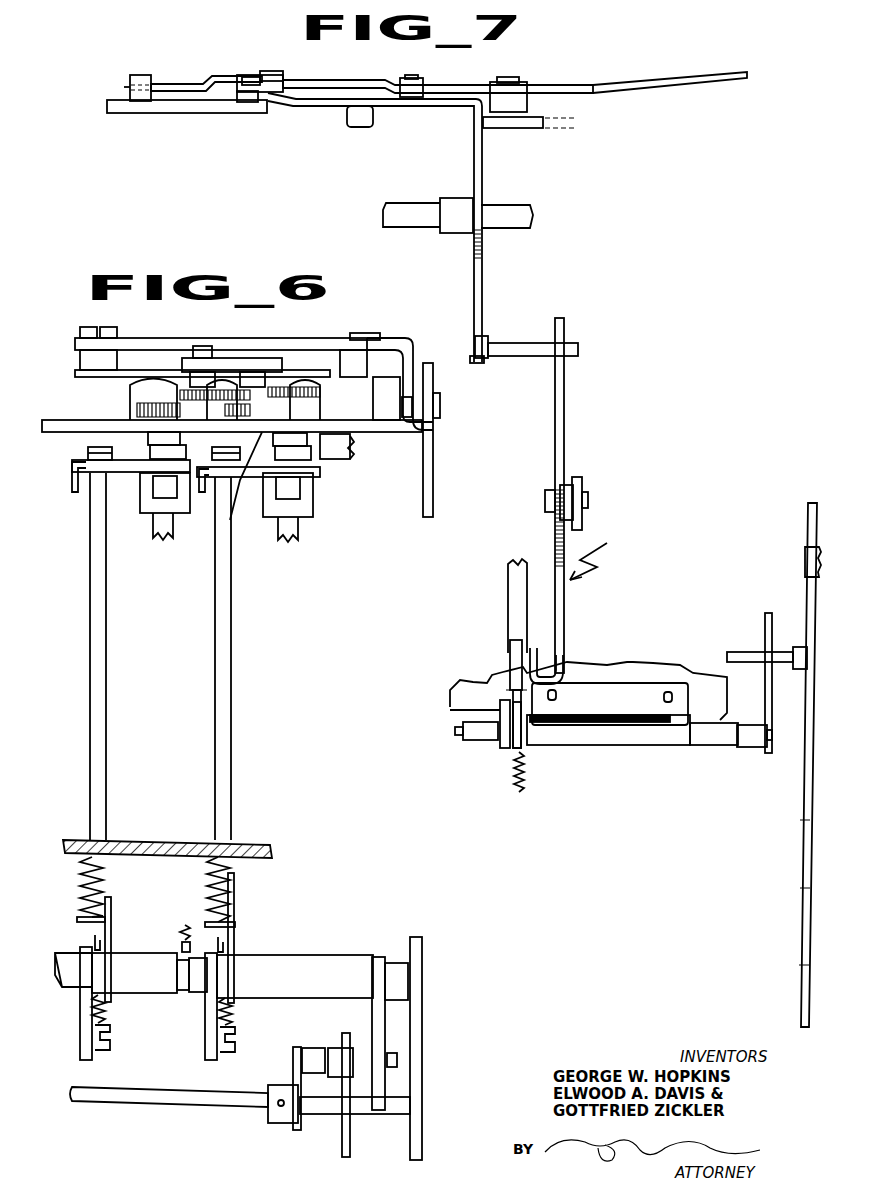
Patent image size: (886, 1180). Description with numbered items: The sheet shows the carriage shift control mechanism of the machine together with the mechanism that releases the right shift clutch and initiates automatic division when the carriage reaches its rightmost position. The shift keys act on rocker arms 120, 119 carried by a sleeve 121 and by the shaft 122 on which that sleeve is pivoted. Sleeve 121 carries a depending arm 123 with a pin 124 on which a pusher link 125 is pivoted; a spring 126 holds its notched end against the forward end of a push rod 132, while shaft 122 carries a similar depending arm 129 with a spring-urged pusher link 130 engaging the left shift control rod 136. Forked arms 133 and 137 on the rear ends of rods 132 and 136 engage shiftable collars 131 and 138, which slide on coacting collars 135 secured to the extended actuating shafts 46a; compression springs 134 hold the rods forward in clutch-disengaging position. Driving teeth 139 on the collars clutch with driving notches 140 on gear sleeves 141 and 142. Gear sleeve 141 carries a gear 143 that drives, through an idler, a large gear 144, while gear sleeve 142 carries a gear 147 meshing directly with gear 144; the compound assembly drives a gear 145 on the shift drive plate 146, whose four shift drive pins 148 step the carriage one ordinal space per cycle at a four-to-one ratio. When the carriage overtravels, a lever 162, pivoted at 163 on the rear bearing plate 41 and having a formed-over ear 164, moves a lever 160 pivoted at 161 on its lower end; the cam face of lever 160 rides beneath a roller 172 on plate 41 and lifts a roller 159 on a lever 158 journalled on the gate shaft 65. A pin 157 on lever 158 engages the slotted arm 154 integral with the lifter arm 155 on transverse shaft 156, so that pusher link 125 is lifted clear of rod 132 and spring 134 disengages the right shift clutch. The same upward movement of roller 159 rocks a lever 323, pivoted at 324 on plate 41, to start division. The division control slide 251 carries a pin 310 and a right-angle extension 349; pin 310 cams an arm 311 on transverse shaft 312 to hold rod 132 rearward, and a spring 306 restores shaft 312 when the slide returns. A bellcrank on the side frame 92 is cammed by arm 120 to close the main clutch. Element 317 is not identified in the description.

In FIG. 7, the rear bearing plate 41 is at (178, 114).
In FIG. 7, the roller 172 is at (140, 75).
In FIG. 7, the lever 160 is at (180, 84).
In FIG. 7, the pivot 161 is at (276, 71).
In FIG. 7, the pivot 163 is at (245, 102).
In FIG. 7, the lever 162 is at (308, 106).
In FIG. 7, the formed-over ear 164 is at (360, 117).
In FIG. 7, the roller 159 is at (410, 78).
In FIG. 7, the lever 323 is at (610, 86).
In FIG. 7, the pivot 324 is at (515, 113).
In FIG. 7, the gate shaft 65 is at (528, 213).
In FIG. 7, the lever 158 is at (482, 284).
In FIG. 7, the pin 157 is at (516, 356).
In FIG. 7, the rearwardly extending arm 154 is at (564, 426).
In FIG. 7, the transverse shaft 156 is at (588, 500).
In FIG. 7, the lifter arm 155 is at (606, 557).
In FIG. 7, the push rod 132 is at (509, 589).
In FIG. 6, the push rod 132 is at (231, 643).
In FIG. 7, the pusher link 125 is at (510, 641).
In FIG. 6, the pusher link 125 is at (228, 947).
In FIG. 7, the hook 317 is at (557, 650).
In FIG. 7, the spring 126 is at (540, 712).
In FIG. 6, the spring 126 is at (232, 1010).
In FIG. 7, the transverse shaft 312 is at (718, 737).
In FIG. 7, the spring 306 is at (530, 790).
In FIG. 7, the arm 311 is at (765, 690).
In FIG. 7, the pin 310 is at (752, 650).
In FIG. 7, the division control slide 251 is at (805, 889).
In FIG. 7, the right angle extension 349 is at (805, 553).
In FIG. 6, the shift drive pins 148 is at (202, 346).
In FIG. 6, the shift drive plate 146 is at (258, 358).
In FIG. 6, the gear 145 is at (215, 372).
In FIG. 6, the gear sleeve 142 is at (150, 392).
In FIG. 6, the gear 147 is at (137, 409).
In FIG. 6, the gear 143 is at (320, 390).
In FIG. 6, the gear sleeve 141 is at (300, 408).
In FIG. 6, the driving notches 140 is at (160, 438).
In FIG. 6, the driving teeth 139 is at (178, 452).
In FIG. 6, the shiftable drive establishing collar 138 is at (165, 492).
In FIG. 6, the forked arm 137 is at (74, 480).
In FIG. 6, the coacting collars 135 is at (150, 518).
In FIG. 6, the shiftable drive establishing collar 131 is at (290, 488).
In FIG. 6, the extended actuating shafts 46a is at (165, 542).
In FIG. 6, the forked arm 133 is at (210, 492).
In FIG. 6, the large gear 144 is at (262, 440).
In FIG. 6, the left shift control rod 136 is at (106, 643).
In FIG. 6, the compression springs 134 is at (207, 881).
In FIG. 6, the depending arm 129 is at (80, 1037).
In FIG. 6, the depending arm 123 is at (205, 1043).
In FIG. 6, the sleeve 121 is at (300, 955).
In FIG. 6, the shaft 122 is at (48, 958).
In FIG. 6, the pusher link 130 is at (103, 945).
In FIG. 6, the pin 124 is at (237, 1047).
In FIG. 6, the rocker arm 119 is at (385, 1010).
In FIG. 6, the side frame 92 is at (422, 1048).
In FIG. 6, the rocker arm 120 is at (355, 1085).